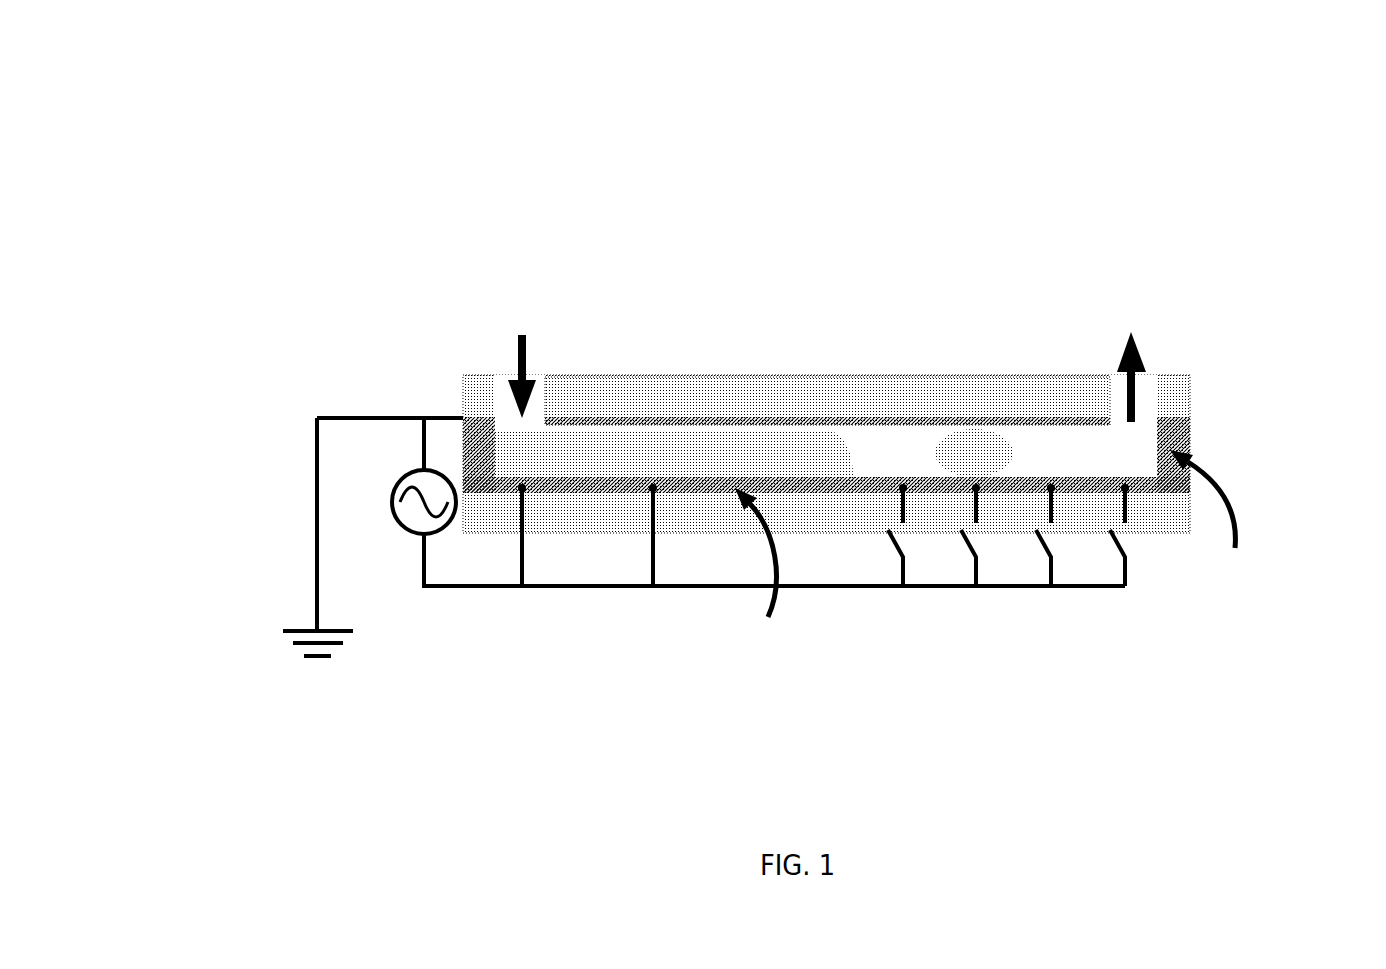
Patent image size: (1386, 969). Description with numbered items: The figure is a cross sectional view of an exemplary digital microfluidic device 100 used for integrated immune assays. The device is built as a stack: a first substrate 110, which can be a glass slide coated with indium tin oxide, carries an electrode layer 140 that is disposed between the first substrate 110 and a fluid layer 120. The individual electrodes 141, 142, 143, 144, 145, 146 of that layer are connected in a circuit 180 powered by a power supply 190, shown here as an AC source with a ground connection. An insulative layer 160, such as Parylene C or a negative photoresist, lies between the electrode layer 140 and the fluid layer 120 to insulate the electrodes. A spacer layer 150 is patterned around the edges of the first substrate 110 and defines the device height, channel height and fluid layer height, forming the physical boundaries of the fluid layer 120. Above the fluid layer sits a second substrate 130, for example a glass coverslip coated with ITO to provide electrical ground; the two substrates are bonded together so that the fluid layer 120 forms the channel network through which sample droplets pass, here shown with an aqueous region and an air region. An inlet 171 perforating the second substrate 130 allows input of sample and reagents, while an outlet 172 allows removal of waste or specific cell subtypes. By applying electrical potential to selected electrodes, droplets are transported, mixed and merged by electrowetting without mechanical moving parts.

The digital microfluidic device 100 is at (179, 131).
The first substrate 110 is at (1180, 510).
The fluid layer 120 is at (862, 448).
The second substrate 130 is at (948, 383).
The electrode layer 140 is at (799, 582).
The electrode 141 is at (518, 489).
The electrode 142 is at (637, 487).
The electrode 143 is at (900, 490).
The electrode 144 is at (973, 490).
The electrode 145 is at (1048, 491).
The electrode 146 is at (1123, 491).
The spacer layer 150 is at (1163, 472).
The insulative layer 160 is at (562, 490).
The inlet 171 is at (530, 363).
The outlet 172 is at (1139, 384).
The circuit 180 is at (298, 658).
The power supply 190 is at (409, 527).